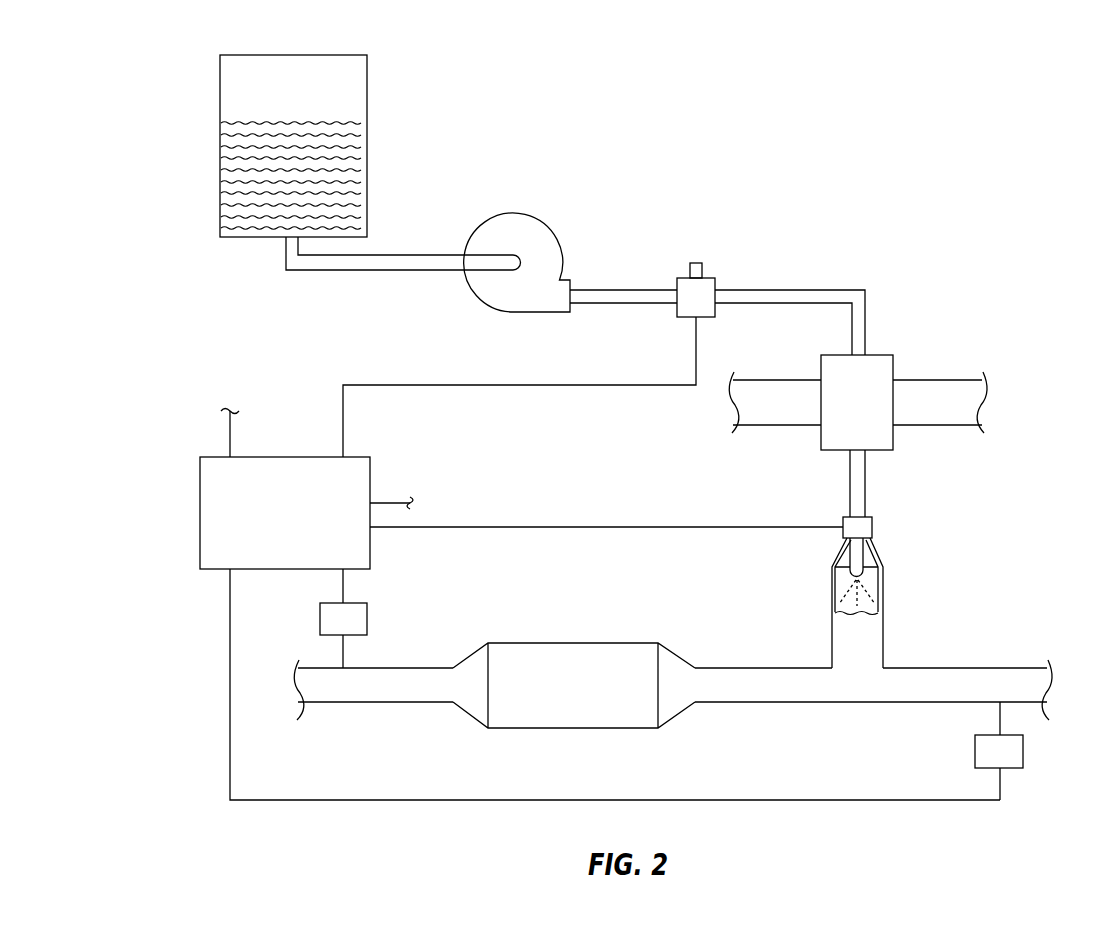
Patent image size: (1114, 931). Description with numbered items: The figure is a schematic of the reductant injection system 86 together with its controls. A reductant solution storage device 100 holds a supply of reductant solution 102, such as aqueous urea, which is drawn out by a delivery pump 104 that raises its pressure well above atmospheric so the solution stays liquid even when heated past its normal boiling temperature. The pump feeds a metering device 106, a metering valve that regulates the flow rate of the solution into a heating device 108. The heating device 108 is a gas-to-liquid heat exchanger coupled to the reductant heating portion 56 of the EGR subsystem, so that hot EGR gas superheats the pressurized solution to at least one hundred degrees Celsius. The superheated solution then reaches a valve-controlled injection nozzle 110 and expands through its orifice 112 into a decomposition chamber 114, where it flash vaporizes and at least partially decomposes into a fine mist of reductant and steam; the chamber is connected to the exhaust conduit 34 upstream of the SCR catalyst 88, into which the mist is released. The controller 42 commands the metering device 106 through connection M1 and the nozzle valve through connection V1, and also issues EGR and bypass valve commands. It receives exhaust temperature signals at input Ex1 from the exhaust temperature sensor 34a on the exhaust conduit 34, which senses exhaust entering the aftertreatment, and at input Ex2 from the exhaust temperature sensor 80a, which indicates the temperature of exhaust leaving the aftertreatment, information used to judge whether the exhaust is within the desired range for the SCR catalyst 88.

The reductant injection system 86 is at (1022, 94).
The reductant solution storage device 100 is at (367, 93).
The reductant solution 102 is at (350, 178).
The delivery pump 104 is at (513, 213).
The metering device 106 is at (707, 277).
The heating device 108 is at (880, 353).
The reductant heating portion 56 is at (940, 378).
The valve-controlled injection nozzle 110 is at (872, 521).
The orifice 112 is at (862, 558).
The decomposition chamber 114 is at (878, 585).
The exhaust conduit 34 is at (905, 703).
The exhaust temperature sensor 34a is at (1023, 755).
The controller 42 is at (194, 540).
The exhaust temperature sensor 80a is at (367, 619).
The SCR catalyst 88 is at (600, 729).